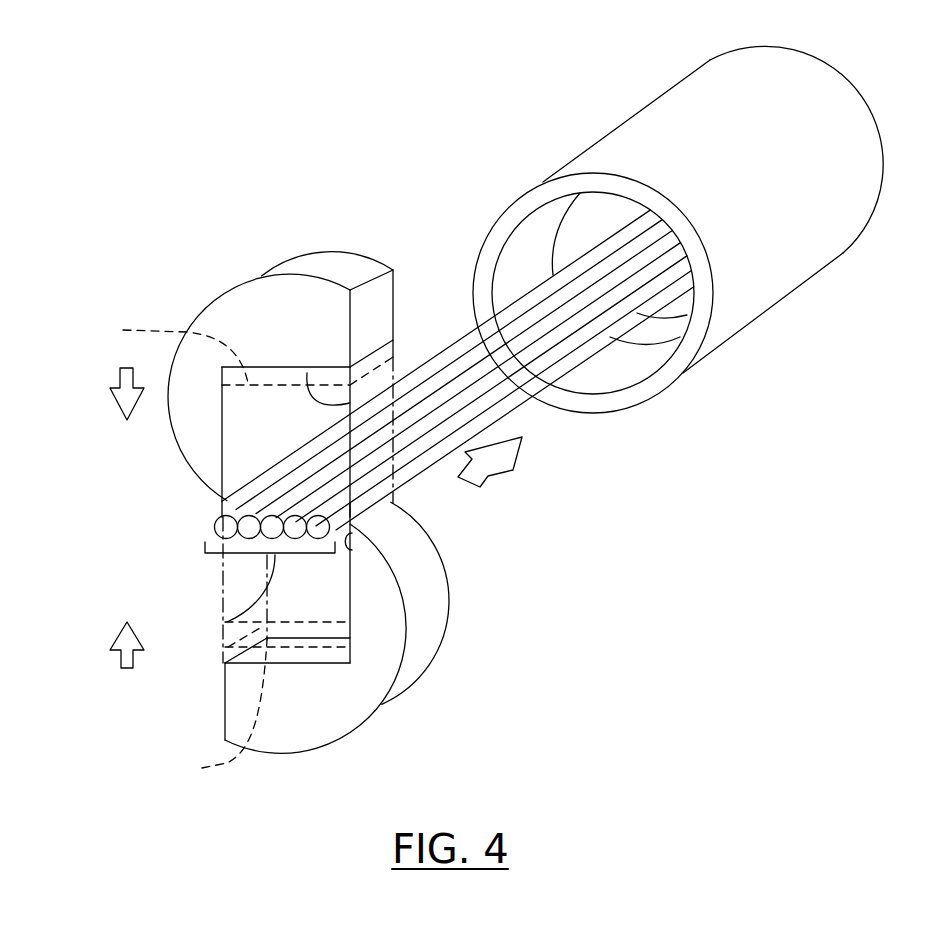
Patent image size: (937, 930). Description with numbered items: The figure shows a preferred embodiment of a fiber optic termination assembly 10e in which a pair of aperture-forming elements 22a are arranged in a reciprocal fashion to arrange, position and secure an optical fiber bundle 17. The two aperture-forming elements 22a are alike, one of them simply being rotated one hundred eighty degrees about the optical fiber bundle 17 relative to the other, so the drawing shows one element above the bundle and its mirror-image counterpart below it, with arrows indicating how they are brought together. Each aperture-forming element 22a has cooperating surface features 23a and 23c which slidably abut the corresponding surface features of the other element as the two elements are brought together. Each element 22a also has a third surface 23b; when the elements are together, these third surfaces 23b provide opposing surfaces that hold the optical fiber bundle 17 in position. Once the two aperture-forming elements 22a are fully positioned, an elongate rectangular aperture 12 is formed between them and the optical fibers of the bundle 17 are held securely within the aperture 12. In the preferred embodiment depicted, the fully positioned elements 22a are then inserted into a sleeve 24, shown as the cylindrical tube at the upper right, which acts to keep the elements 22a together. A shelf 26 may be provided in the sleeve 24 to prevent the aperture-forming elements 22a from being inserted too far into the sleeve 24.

The fiber optic termination assembly 10e is at (323, 120).
The elongate rectangular aperture 12 is at (179, 550).
The optical fiber bundle 17 is at (222, 621).
The aperture-forming element 22a is at (232, 320).
The cooperating surface feature 23a is at (380, 308).
The third surface 23b is at (392, 378).
The cooperating surface feature 23c is at (240, 447).
The sleeve 24 is at (640, 404).
The shelf 26 is at (567, 227).